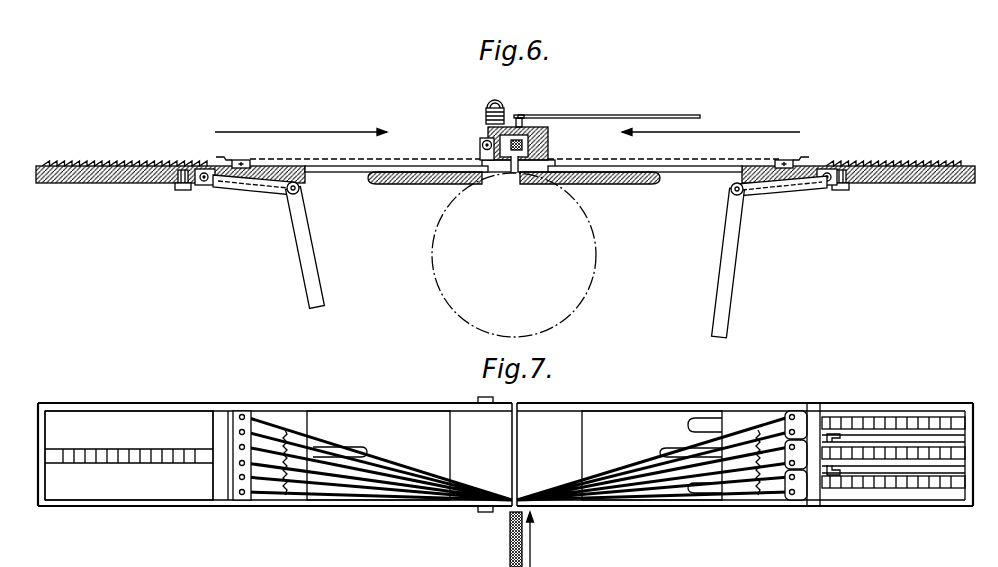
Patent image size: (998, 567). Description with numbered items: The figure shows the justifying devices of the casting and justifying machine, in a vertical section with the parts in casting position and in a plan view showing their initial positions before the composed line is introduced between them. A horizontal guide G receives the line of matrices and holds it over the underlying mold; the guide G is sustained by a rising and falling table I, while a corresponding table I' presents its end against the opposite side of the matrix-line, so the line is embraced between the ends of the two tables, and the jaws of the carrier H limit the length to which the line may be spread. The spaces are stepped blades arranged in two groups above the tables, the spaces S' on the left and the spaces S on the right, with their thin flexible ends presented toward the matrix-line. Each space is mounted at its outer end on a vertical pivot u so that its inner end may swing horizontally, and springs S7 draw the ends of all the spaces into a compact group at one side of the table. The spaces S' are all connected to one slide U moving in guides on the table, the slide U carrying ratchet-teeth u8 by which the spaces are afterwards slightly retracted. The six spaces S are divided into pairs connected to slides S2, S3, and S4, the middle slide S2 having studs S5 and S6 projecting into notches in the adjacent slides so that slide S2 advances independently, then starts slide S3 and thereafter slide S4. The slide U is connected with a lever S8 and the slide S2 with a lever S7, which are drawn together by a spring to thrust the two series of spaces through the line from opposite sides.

In FIG. 6, the slide U is at (170, 159).
In FIG. 7, the slide U is at (129, 455).
In FIG. 6, the vertical pivot u is at (512, 152).
In FIG. 7, the vertical pivot u is at (244, 430).
In FIG. 7, the ratchet-teeth u8 is at (133, 463).
In FIG. 6, the spaces S' is at (396, 150).
In FIG. 7, the spaces S' is at (378, 455).
In FIG. 6, the spaces S is at (645, 157).
In FIG. 7, the spaces S is at (652, 455).
In FIG. 6, the slide S2 is at (898, 161).
In FIG. 7, the slide S2 is at (960, 448).
In FIG. 7, the slide S3 is at (957, 493).
In FIG. 7, the slide S4 is at (933, 409).
In FIG. 7, the stud S5 is at (835, 478).
In FIG. 7, the stud S6 is at (838, 436).
In FIG. 6, the lever S7 is at (723, 263).
In FIG. 7, the lever S7 is at (285, 500).
In FIG. 6, the lever S8 is at (312, 260).
In FIG. 6, the table I' is at (425, 191).
In FIG. 7, the table I' is at (275, 443).
In FIG. 6, the table I is at (592, 190).
In FIG. 7, the table I is at (745, 445).
In FIG. 6, the carrier H is at (490, 134).
In FIG. 6, the horizontal guide G is at (552, 138).